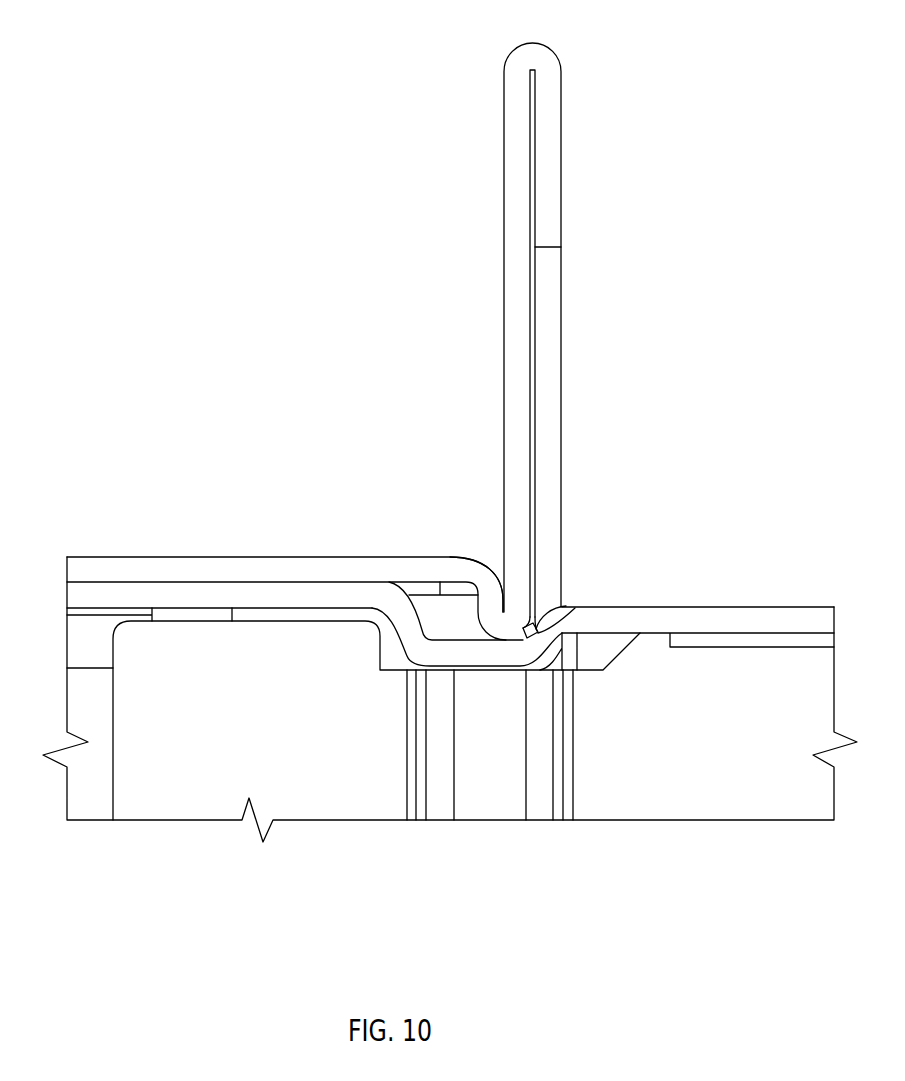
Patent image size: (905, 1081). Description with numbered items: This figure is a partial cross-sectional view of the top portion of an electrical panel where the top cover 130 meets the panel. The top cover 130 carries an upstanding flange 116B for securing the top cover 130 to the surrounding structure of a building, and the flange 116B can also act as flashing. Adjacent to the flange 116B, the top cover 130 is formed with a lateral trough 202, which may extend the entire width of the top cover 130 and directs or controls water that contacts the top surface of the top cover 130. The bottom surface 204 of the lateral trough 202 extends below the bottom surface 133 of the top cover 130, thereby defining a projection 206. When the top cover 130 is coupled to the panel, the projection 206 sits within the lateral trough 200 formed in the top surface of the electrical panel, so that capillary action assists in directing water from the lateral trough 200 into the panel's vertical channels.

The flange 116B is at (504, 190).
The top cover 130 is at (202, 557).
The bottom surface of the top cover 133 is at (297, 583).
The lateral trough 200 is at (443, 552).
The lateral trough 202 is at (487, 543).
The bottom surface of the lateral trough 204 is at (458, 640).
The projection 206 is at (542, 628).